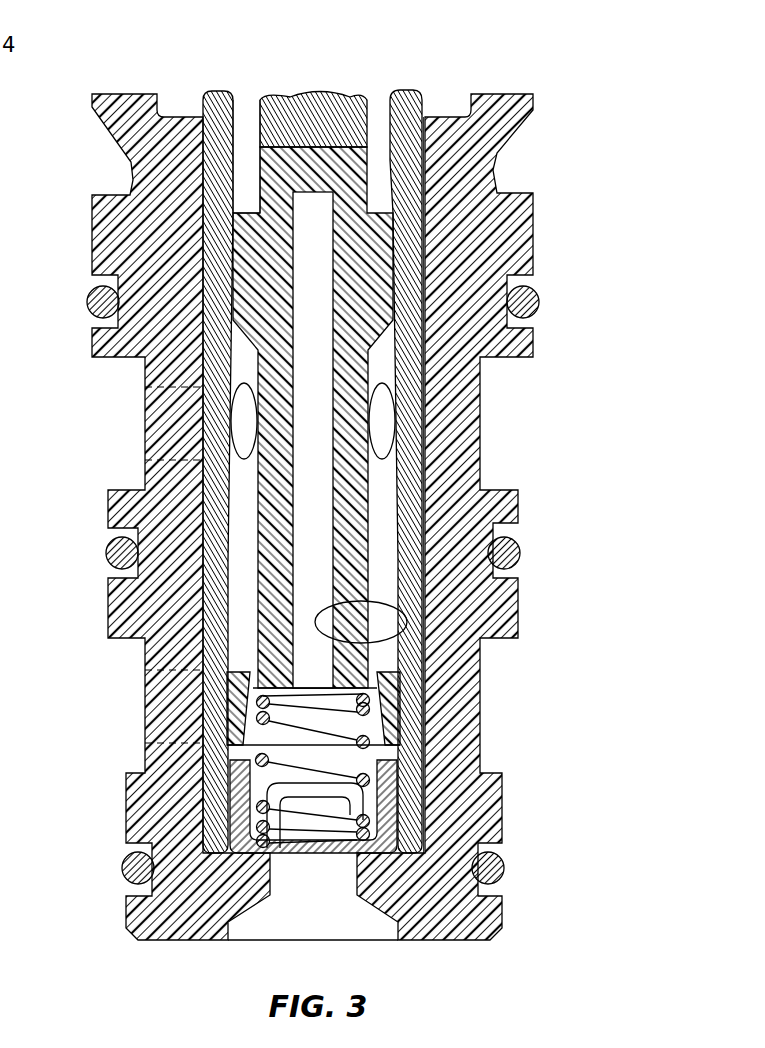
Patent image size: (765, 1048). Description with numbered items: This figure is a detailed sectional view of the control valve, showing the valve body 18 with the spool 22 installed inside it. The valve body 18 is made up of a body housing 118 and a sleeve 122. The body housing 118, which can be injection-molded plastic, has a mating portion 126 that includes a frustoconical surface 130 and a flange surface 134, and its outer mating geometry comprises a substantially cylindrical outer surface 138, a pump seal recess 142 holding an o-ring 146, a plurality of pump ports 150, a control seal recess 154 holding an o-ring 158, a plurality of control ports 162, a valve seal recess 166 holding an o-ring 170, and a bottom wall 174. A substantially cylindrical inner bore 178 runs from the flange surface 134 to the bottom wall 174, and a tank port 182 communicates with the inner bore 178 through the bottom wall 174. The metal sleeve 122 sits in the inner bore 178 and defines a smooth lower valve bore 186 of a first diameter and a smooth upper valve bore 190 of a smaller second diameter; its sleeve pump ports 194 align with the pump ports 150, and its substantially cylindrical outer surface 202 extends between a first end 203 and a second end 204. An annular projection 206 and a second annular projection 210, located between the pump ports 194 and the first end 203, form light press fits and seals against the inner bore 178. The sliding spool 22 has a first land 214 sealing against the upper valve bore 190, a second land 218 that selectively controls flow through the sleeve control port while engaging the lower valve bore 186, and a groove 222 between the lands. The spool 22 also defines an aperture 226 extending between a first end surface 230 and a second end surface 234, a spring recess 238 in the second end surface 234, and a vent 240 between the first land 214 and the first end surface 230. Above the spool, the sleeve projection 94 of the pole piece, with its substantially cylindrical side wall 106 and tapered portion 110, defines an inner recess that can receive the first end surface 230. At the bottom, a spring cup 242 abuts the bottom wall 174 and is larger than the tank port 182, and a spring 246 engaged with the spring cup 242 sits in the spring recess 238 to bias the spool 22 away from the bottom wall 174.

The valve body 18 is at (551, 364).
The spool 22 is at (376, 531).
The sleeve projection 94 is at (383, 112).
The substantially cylindrical side wall 106 is at (418, 108).
The tapered portion 110 is at (425, 157).
The body housing 118 is at (450, 378).
The sleeve 122 is at (407, 427).
The mating portion 126 is at (85, 120).
The frustoconical surface 130 is at (110, 138).
The flange surface 134 is at (508, 92).
The substantially cylindrical outer surface 138 is at (108, 600).
The pump seal recess 142 is at (97, 321).
The o-ring 146 is at (92, 300).
The pump ports 150 is at (146, 440).
The control seal recess 154 is at (118, 573).
The o-ring 158 is at (108, 541).
The control ports 162 is at (162, 741).
The valve seal recess 166 is at (133, 893).
The o-ring 170 is at (123, 855).
The bottom wall 174 is at (253, 895).
The inner bore 178 is at (205, 797).
The tank port 182 is at (345, 882).
The lower valve bore 186 is at (243, 612).
The upper valve bore 190 is at (243, 180).
The sleeve pump ports 194 is at (243, 437).
The substantially cylindrical outer surface 202 is at (200, 690).
The first end 203 is at (224, 93).
The second end 204 is at (190, 934).
The annular projection 206 is at (205, 516).
The annular projection 210 is at (199, 132).
The first land 214 is at (423, 217).
The second land 218 is at (372, 700).
The groove 222 is at (372, 570).
The aperture 226 is at (330, 618).
The first end surface 230 is at (350, 113).
The second end surface 234 is at (396, 763).
The spring recess 238 is at (377, 803).
The vent 240 is at (320, 187).
The spring cup 242 is at (486, 843).
The spring 246 is at (380, 823).